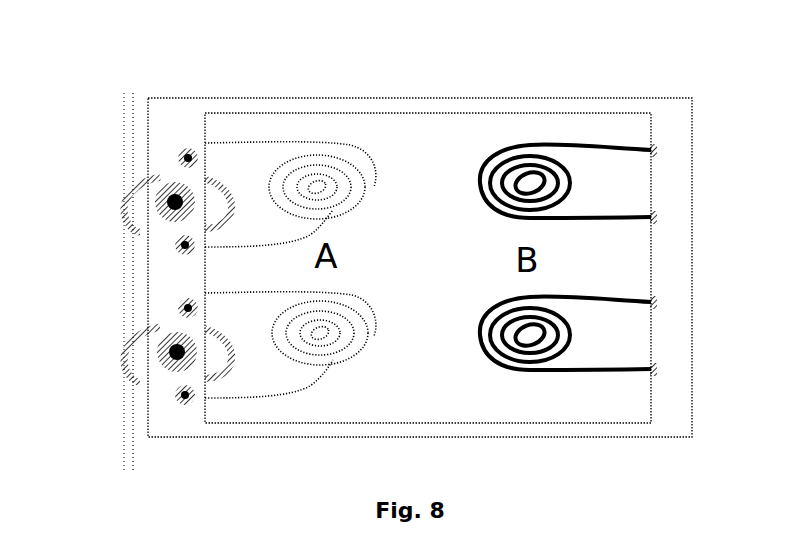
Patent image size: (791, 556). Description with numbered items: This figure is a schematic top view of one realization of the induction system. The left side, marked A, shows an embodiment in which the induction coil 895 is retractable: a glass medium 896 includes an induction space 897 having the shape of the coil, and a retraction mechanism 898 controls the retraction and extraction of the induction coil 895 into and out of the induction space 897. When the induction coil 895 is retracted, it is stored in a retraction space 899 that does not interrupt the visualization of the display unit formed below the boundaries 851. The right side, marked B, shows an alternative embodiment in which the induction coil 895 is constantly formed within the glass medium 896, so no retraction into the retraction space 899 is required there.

The boundaries 851 is at (375, 113).
The induction coil 895 is at (172, 205).
The glass medium 896 is at (430, 197).
The induction space 897 is at (327, 163).
The retraction mechanism 898 is at (157, 162).
The retraction space 899 is at (175, 200).